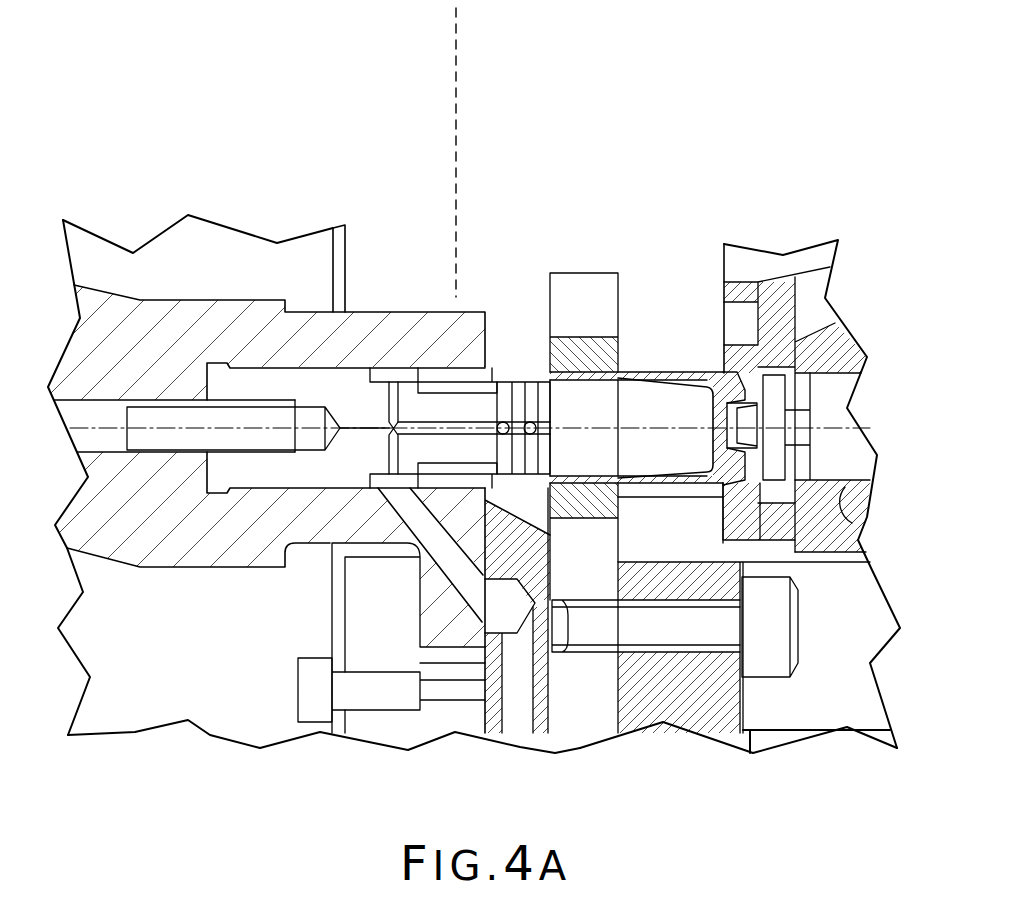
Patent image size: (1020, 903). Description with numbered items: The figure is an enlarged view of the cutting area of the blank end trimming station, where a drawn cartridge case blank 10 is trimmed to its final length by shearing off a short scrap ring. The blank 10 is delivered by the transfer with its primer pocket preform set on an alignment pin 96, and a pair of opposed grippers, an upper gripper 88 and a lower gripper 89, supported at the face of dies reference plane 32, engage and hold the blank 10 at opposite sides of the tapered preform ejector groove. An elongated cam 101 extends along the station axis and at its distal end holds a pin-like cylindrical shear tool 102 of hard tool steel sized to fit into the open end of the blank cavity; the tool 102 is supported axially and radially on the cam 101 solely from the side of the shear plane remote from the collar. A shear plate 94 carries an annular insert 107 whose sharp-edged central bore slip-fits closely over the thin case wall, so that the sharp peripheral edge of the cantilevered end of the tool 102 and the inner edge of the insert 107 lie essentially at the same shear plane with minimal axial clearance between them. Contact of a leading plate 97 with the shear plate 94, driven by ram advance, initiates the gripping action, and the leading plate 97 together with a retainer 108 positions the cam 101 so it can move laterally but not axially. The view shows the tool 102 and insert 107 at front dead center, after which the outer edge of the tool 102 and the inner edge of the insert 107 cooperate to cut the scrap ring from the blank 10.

The face of dies reference plane 32 is at (522, 48).
The elongated cam 101 is at (202, 565).
The shear tool 102 is at (515, 376).
The annular insert 107 is at (547, 350).
The blank 10 is at (661, 358).
The alignment pin 96 is at (747, 408).
The upper gripper 88 is at (724, 368).
The shear plate 94 is at (578, 703).
The lower gripper 89 is at (725, 518).
The leading plate 97 is at (540, 733).
The retainer 108 is at (372, 738).